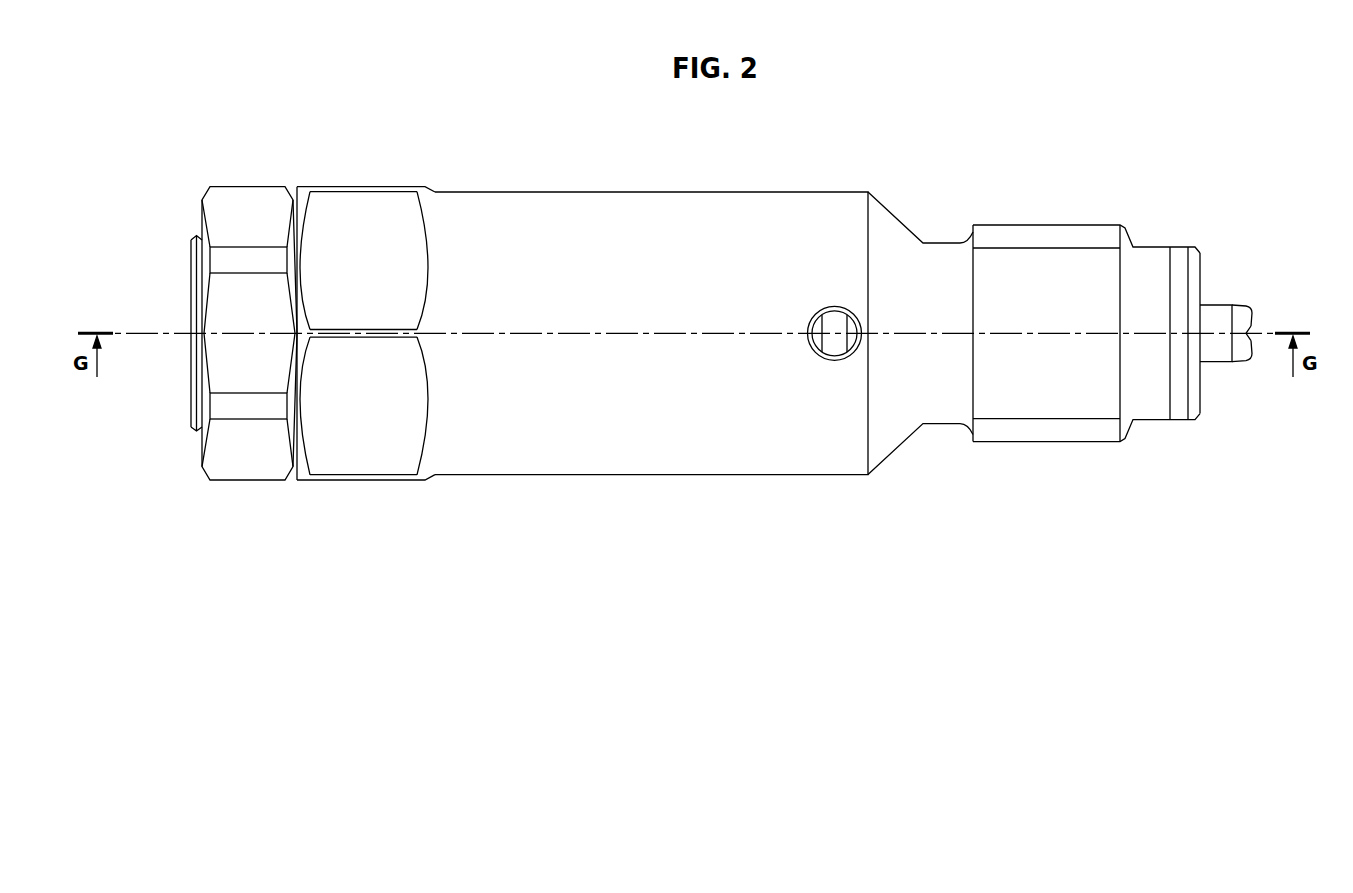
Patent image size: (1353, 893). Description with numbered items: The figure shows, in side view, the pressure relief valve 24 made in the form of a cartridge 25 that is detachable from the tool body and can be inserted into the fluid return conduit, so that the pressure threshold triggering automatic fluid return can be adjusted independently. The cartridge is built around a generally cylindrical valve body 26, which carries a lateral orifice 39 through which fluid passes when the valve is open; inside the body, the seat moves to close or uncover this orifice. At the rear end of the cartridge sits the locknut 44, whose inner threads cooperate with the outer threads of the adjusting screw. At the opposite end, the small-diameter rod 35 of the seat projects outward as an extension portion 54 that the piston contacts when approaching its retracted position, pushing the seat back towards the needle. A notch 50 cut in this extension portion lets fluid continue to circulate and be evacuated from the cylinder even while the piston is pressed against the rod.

The pressure relief valve 24 is at (326, 145).
The cartridge 25 is at (531, 207).
The valve body 26 is at (380, 207).
The second portion of small diameter (rod) 35 is at (1215, 351).
The lateral orifice 39 is at (831, 322).
The locknut 44 is at (252, 466).
The notch 50 is at (1248, 331).
The extension portion 54 is at (1242, 317).